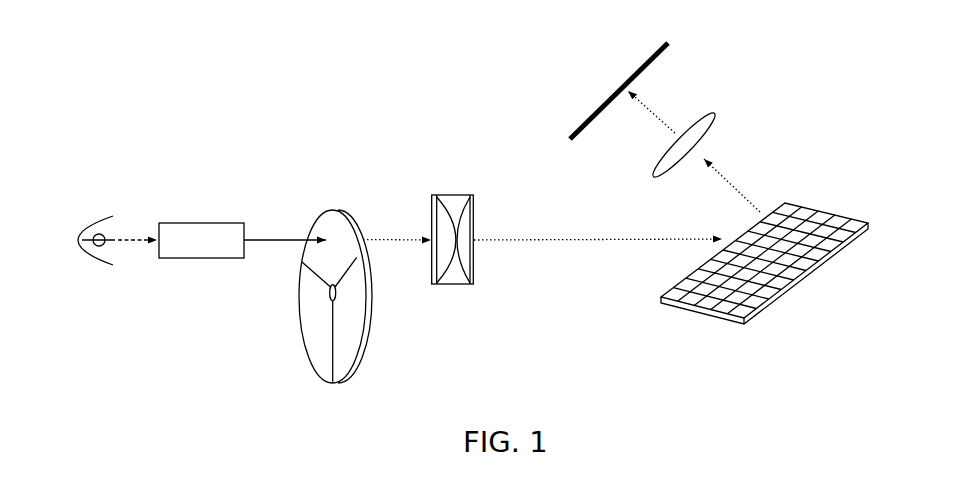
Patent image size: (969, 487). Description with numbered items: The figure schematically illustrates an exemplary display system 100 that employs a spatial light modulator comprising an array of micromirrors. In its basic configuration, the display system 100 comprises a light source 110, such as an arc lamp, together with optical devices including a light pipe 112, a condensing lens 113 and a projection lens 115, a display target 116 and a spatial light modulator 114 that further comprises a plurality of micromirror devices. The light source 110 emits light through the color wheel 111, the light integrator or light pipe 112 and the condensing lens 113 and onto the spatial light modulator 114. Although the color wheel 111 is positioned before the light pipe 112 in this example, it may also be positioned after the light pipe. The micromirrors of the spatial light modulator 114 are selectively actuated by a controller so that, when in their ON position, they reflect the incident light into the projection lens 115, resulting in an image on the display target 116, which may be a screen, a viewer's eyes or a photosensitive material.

The display system 100 is at (340, 121).
The light source 110 is at (92, 212).
The color wheel 111 is at (338, 210).
The light pipe 112 is at (202, 222).
The condensing lens 113 is at (453, 194).
The spatial light modulator 114 is at (800, 198).
The projection lens 115 is at (713, 113).
The display target 116 is at (646, 42).